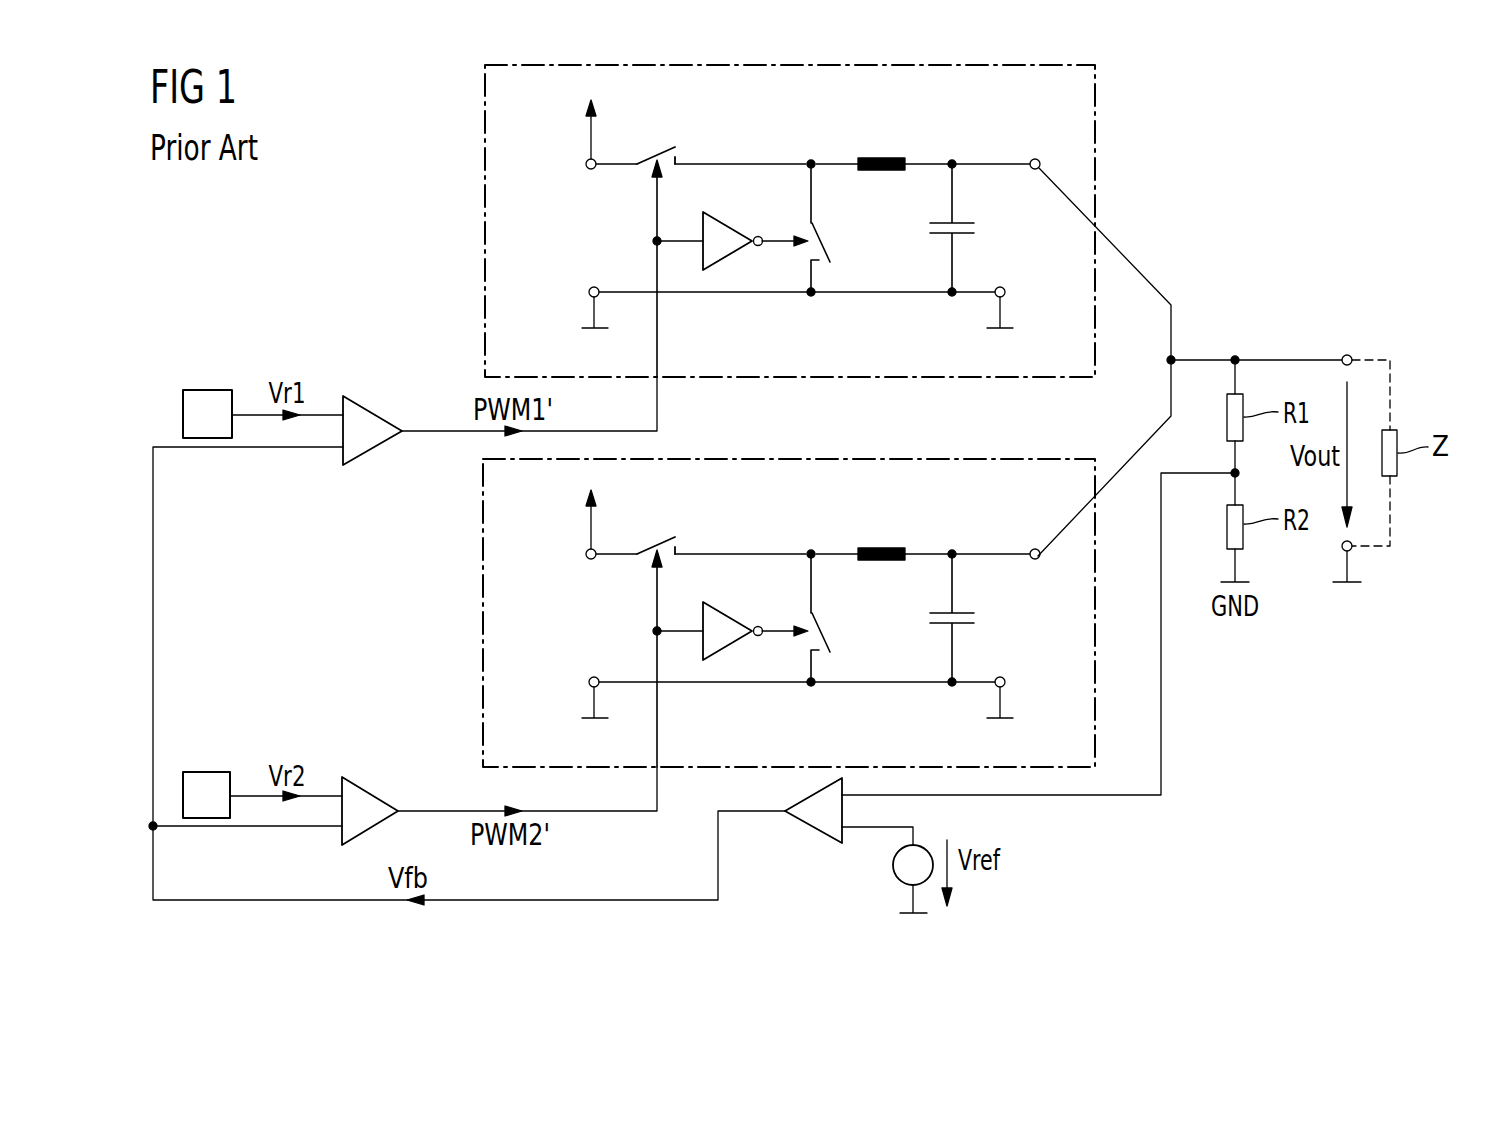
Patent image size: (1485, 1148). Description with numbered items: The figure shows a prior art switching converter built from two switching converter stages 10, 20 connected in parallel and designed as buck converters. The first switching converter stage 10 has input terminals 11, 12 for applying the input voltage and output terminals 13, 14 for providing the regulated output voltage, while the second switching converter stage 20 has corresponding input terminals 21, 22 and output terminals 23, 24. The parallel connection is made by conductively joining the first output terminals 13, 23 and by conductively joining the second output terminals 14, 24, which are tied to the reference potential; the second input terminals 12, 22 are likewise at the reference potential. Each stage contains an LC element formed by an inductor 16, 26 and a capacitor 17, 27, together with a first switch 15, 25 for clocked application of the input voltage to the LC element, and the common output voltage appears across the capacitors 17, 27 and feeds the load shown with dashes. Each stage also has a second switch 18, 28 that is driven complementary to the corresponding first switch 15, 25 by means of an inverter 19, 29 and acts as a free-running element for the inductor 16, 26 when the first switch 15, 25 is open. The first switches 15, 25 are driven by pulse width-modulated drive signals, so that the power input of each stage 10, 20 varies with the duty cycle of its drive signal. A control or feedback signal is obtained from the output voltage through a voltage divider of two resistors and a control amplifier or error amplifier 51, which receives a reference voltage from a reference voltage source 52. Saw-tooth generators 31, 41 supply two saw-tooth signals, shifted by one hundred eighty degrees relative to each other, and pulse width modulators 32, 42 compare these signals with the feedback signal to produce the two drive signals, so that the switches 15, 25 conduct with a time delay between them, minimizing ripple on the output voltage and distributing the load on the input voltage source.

The first switching converter stage 10 is at (484, 183).
The input terminal 11 is at (590, 170).
The input terminal 12 is at (588, 291).
The output terminal 13 is at (1034, 158).
The output terminal 14 is at (1006, 291).
The first switch 15 is at (665, 146).
The inductor 16 is at (880, 157).
The capacitor 17 is at (976, 226).
The second switch 18 is at (826, 244).
The inverter 19 is at (728, 228).
The second switching converter stage 20 is at (483, 578).
The input terminal 21 is at (590, 560).
The input terminal 22 is at (588, 681).
The output terminal 23 is at (1034, 548).
The output terminal 24 is at (1006, 681).
The first switch 25 is at (665, 536).
The inductor 26 is at (880, 547).
The capacitor 27 is at (976, 616).
The second switch 28 is at (826, 634).
The inverter 29 is at (728, 618).
The saw-tooth generator 31 is at (207, 390).
The pulse width modulator 32 is at (373, 411).
The saw-tooth generator 41 is at (205, 772).
The pulse width modulator 42 is at (370, 792).
The control amplifier 51 is at (812, 829).
The reference voltage source 52 is at (893, 866).